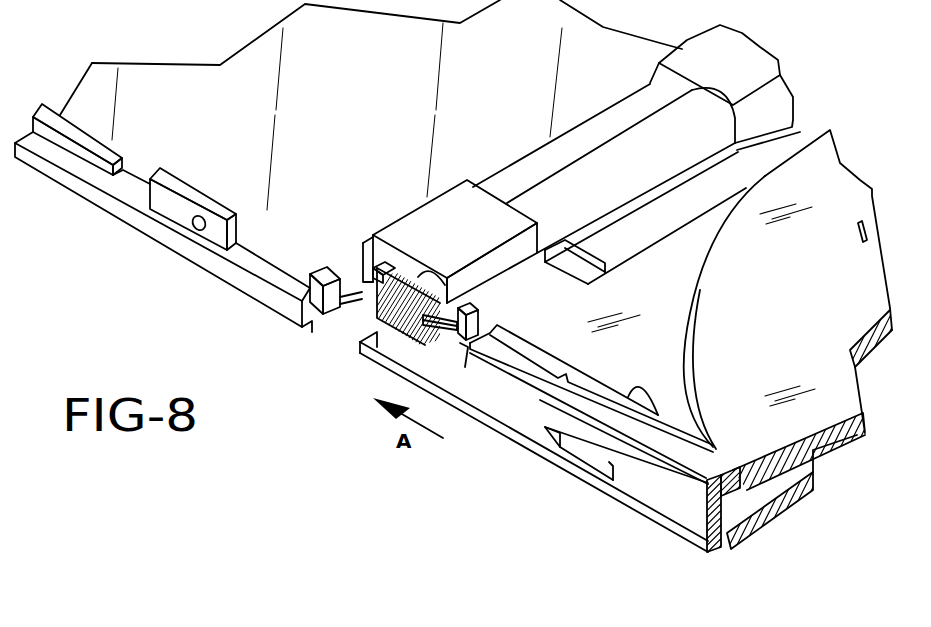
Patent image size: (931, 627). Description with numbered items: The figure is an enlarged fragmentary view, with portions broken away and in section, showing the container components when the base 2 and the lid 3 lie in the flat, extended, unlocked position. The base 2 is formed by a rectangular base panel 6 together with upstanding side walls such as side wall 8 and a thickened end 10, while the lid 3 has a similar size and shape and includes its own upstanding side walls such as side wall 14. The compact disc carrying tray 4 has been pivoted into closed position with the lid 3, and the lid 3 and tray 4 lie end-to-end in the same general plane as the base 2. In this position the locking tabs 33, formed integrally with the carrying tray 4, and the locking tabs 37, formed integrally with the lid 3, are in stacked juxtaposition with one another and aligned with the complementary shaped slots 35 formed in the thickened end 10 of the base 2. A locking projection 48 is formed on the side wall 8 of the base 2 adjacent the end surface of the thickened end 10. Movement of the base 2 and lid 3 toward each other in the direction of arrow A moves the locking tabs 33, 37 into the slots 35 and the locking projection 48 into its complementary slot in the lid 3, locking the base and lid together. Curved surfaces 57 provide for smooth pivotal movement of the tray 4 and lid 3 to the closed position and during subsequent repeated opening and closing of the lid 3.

The base 2 is at (321, 101).
The lid 3 is at (766, 519).
The compact disc carrying tray 4 is at (778, 318).
The base panel 6 is at (192, 80).
The side wall 8 is at (95, 162).
The thickened end 10 is at (398, 208).
The side wall 14 is at (670, 497).
The locking tabs 33 is at (645, 212).
The slots 35 is at (555, 245).
The locking tabs 37 is at (575, 268).
The locking projections 48 is at (333, 312).
The curved surfaces 57 is at (665, 130).